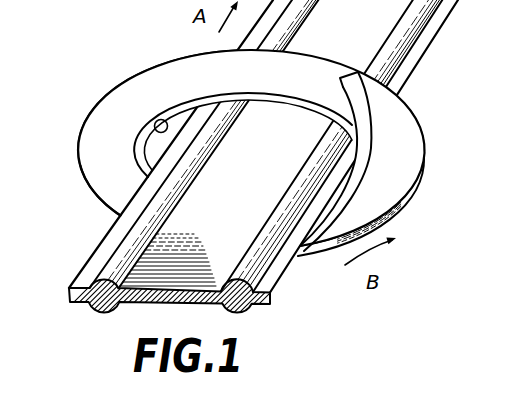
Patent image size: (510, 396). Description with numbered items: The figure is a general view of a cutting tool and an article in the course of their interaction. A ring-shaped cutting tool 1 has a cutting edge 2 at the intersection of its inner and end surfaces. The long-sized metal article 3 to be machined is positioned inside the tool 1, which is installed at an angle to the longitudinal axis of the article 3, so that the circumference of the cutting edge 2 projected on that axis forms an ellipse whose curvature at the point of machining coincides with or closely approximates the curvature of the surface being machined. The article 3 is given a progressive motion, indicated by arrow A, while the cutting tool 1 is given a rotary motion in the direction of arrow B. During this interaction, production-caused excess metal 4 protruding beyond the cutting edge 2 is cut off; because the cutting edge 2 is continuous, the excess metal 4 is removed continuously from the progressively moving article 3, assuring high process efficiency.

The ring-shaped cutting tool 1 is at (108, 106).
The cutting edge 2 is at (153, 126).
The article 3 is at (110, 260).
The excess metal 4 is at (367, 141).